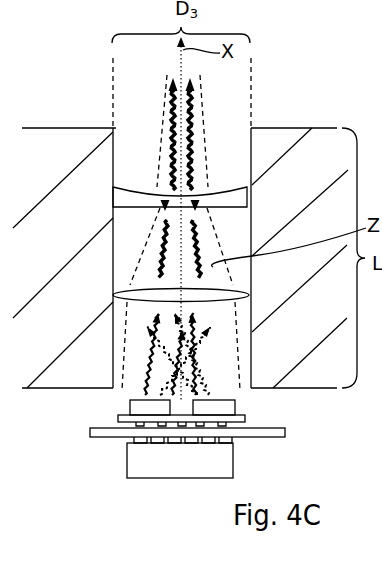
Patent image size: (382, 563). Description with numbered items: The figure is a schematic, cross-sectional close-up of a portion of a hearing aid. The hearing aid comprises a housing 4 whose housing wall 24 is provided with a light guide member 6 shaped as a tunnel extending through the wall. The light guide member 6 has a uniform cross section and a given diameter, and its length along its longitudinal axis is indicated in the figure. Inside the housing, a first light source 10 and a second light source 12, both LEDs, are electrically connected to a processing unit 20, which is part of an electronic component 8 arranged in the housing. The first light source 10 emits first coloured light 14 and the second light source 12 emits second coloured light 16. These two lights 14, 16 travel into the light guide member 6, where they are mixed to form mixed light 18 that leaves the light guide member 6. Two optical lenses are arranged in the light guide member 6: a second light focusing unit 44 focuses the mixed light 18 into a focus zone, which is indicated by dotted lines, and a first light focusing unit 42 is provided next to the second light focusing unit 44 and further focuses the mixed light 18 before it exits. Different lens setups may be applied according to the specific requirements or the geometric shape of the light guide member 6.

The housing 4 is at (30, 125).
The light guide member 6 is at (213, 157).
The electronic component 8 is at (265, 0).
The first light source 10 is at (130, 404).
The second light source 12 is at (235, 413).
The first coloured light 14 is at (150, 350).
The second coloured light 16 is at (205, 368).
The mixed light 18 is at (170, 115).
The processing unit 20 is at (163, 478).
The housing wall 24 is at (276, 145).
The first light focusing unit 42 is at (110, 198).
The second light focusing unit 44 is at (115, 299).